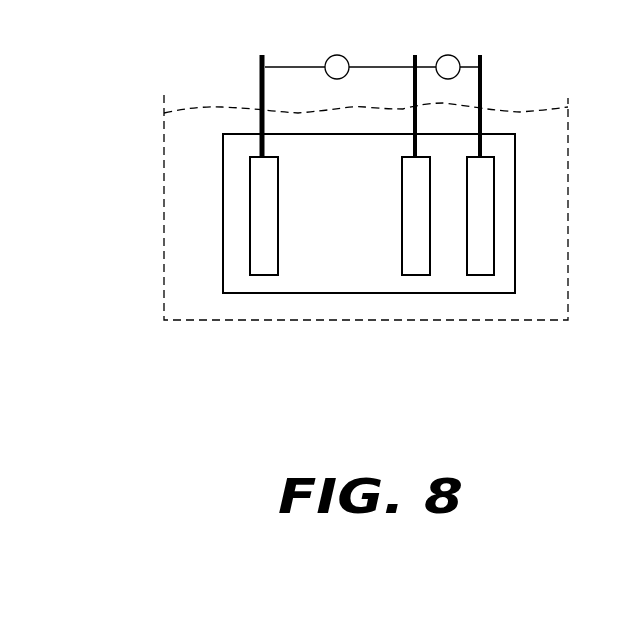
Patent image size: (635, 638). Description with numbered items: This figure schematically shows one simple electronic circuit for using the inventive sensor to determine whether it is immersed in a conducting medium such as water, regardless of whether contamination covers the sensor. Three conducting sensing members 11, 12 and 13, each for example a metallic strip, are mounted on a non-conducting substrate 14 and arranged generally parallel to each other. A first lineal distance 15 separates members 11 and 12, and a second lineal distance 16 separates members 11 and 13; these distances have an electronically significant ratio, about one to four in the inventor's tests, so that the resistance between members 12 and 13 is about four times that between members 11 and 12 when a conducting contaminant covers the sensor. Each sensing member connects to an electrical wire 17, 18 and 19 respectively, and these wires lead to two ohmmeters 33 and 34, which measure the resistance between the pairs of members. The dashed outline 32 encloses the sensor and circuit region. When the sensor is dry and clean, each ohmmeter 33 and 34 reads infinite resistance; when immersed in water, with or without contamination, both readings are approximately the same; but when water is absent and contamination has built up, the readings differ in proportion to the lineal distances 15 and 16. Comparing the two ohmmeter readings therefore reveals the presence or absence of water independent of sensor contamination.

The conducting sensing member 11 is at (418, 267).
The conducting sensing member 12 is at (483, 267).
The conducting sensing member 13 is at (262, 267).
The non-conducting substrate 14 is at (517, 270).
The first lineal distance 15 is at (448, 267).
The second lineal distance 16 is at (353, 228).
The electrical wire 17 is at (412, 55).
The electrical wire 18 is at (482, 55).
The electrical wire 19 is at (258, 55).
The enclosure 32 is at (557, 147).
The ohmmeter 33 is at (450, 55).
The ohmmeter 34 is at (330, 57).